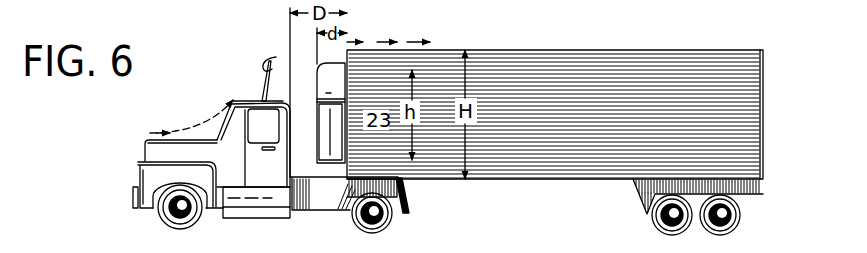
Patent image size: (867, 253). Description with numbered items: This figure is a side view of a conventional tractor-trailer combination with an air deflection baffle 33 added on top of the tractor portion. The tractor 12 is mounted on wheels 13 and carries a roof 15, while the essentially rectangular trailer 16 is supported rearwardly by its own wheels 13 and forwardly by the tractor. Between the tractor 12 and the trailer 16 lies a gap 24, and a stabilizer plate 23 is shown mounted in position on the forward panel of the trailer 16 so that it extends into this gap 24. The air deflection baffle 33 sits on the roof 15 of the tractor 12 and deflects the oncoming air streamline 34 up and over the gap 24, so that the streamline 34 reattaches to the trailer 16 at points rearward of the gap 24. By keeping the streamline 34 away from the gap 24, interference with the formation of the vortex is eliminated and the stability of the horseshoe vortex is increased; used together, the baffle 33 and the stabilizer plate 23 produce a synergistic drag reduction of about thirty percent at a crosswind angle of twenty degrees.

The tractor 12 is at (129, 163).
The wheels 13 is at (394, 222).
The roof 15 is at (254, 98).
The trailer 16 is at (631, 46).
The stabilizer plate 23 is at (334, 122).
The gap 24 is at (318, 139).
The air deflection baffle 33 is at (265, 62).
The air streamline 34 is at (180, 121).